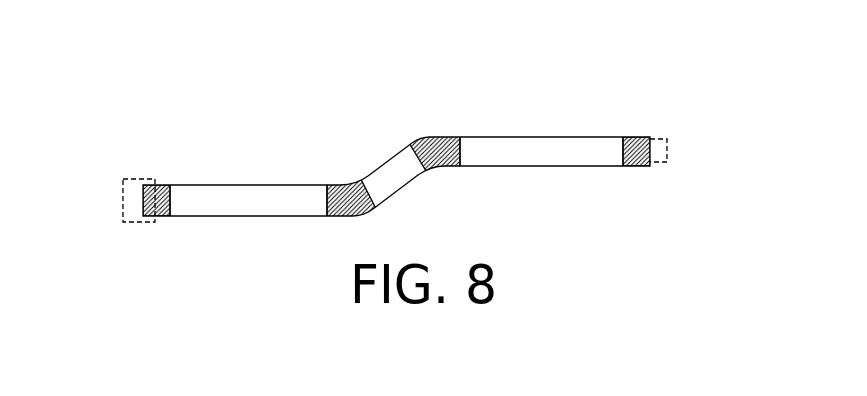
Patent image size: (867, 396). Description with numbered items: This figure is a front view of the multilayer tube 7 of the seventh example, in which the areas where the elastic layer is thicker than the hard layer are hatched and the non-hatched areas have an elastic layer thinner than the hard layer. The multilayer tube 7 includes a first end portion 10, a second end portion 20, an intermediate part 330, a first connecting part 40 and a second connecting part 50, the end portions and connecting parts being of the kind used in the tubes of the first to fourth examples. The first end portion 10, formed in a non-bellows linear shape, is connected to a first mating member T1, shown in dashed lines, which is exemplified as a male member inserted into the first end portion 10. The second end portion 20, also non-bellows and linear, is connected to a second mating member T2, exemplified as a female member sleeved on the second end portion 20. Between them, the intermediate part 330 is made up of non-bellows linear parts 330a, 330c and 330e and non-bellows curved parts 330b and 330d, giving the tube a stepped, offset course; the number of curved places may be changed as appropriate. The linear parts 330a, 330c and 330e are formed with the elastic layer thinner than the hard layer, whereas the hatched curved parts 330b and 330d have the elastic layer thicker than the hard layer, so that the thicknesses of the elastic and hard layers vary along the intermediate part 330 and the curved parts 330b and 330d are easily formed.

The multilayer tube 7 is at (711, 99).
The first end portion 10 is at (636, 137).
The second end portion 20 is at (162, 185).
The first connecting part 40 is at (628, 166).
The second connecting part 50 is at (170, 217).
The intermediate part 330 is at (528, 78).
The linear part 330a is at (487, 137).
The curved part 330b is at (428, 137).
The linear part 330c is at (388, 161).
The curved part 330d is at (342, 185).
The linear part 330e is at (285, 185).
The first mating member T1 is at (660, 139).
The second mating member T2 is at (138, 178).